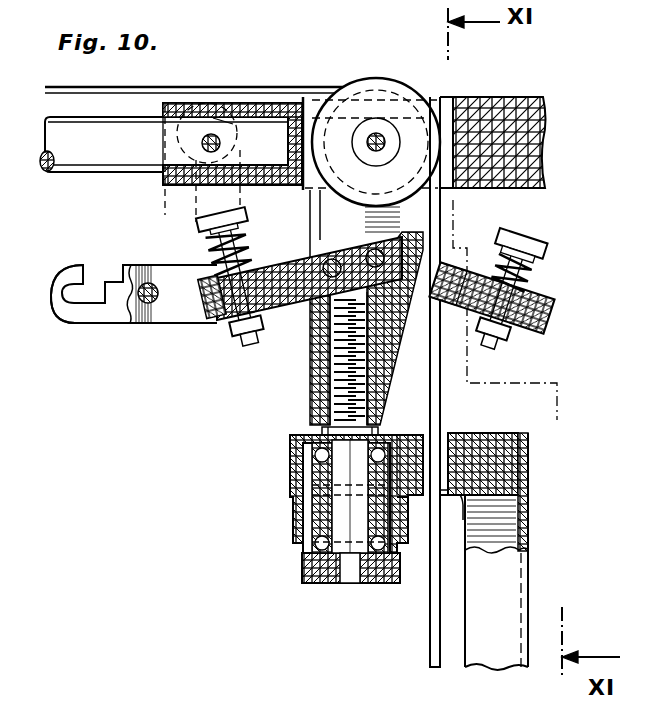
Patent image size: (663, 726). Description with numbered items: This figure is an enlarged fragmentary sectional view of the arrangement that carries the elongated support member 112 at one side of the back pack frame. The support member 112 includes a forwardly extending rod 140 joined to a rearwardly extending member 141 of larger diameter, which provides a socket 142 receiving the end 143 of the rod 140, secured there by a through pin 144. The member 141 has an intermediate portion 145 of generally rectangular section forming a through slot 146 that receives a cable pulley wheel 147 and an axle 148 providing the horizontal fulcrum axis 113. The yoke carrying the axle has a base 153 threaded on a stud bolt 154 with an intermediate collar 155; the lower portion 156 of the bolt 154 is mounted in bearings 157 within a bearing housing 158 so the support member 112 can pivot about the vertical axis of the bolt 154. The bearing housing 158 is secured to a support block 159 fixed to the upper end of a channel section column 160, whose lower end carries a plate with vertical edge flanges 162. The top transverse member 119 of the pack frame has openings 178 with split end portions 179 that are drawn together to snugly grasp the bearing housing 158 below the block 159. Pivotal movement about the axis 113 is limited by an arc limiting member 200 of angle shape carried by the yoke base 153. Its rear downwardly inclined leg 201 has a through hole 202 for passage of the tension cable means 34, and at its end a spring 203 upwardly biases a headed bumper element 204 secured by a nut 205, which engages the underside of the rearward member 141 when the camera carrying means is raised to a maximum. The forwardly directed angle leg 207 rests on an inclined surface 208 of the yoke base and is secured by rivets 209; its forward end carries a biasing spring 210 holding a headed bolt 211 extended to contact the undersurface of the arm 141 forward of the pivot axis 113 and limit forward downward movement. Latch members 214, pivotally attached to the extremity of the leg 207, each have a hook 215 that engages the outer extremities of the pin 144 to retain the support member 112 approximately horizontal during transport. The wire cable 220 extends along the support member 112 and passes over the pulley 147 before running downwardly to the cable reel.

The connecting means 34 is at (441, 397).
The elongated support member 112 is at (90, 152).
The fulcrum axis 113 is at (376, 140).
The top transverse member 119 is at (289, 539).
The forwardly extending rod 140 is at (131, 126).
The rearwardly extending member 141 is at (520, 130).
The socket 142 is at (273, 137).
The end 143 is at (262, 119).
The through pin 144 is at (208, 133).
The intermediate portion 145 is at (443, 97).
The through slot 146 is at (447, 128).
The cable pulley wheel 147 is at (397, 78).
The axle 148 is at (380, 150).
The base 153 is at (320, 383).
The stud bolt 154 is at (340, 407).
The intermediate collar 155 is at (303, 443).
The lower portion 156 is at (347, 517).
The bearings 157 is at (317, 472).
The bearing housing 158 is at (330, 575).
The support block 159 is at (493, 462).
The channel section column 160 is at (535, 590).
The vertical edge flanges 162 is at (497, 645).
The openings 178 is at (443, 488).
The split end portions 179 is at (418, 543).
The arc limiting member 200 is at (420, 243).
The rear downwardly inclined leg 201 is at (537, 312).
The through hole 202 is at (437, 262).
The spring 203 is at (533, 274).
The headed bumper element 204 is at (540, 243).
The nut 205 is at (497, 353).
The forwardly directed angle leg 207 is at (253, 338).
The inclined surface 208 is at (302, 293).
The rivets 209 is at (372, 252).
The biasing spring 210 is at (213, 257).
The headed bolt 211 is at (242, 217).
The latch members 214 is at (147, 325).
The hook 215 is at (68, 265).
The wire cable 220 is at (104, 84).